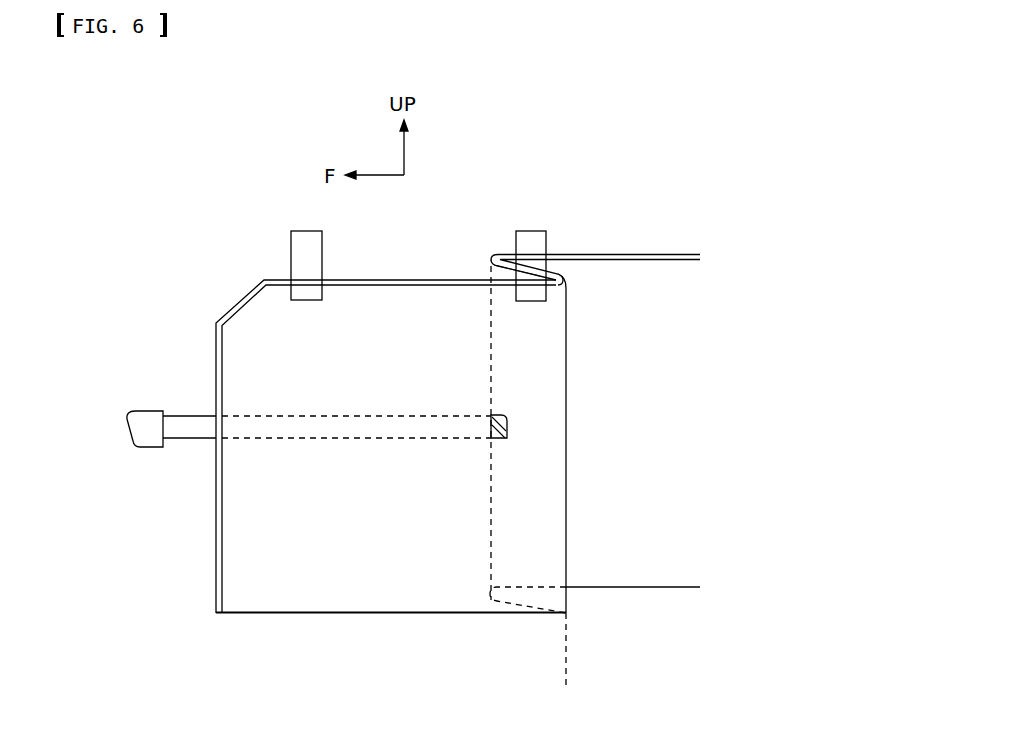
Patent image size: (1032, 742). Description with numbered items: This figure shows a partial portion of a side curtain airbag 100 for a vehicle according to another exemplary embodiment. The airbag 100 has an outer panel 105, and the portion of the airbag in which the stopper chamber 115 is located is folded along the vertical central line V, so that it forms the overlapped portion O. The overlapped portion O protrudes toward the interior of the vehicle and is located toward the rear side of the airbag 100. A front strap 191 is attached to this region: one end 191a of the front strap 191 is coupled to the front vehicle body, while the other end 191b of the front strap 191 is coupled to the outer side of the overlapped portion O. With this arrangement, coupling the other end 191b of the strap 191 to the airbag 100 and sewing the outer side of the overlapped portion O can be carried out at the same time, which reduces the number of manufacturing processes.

The airbag 100 is at (608, 248).
The outer panel 105 is at (668, 254).
The stopper chamber 115 is at (485, 263).
The front strap 191 is at (197, 430).
The one end of the front strap 191a is at (142, 420).
The other end of the front strap 191b is at (507, 422).
The overlapped portion O is at (510, 515).
The vertical central line V is at (566, 660).